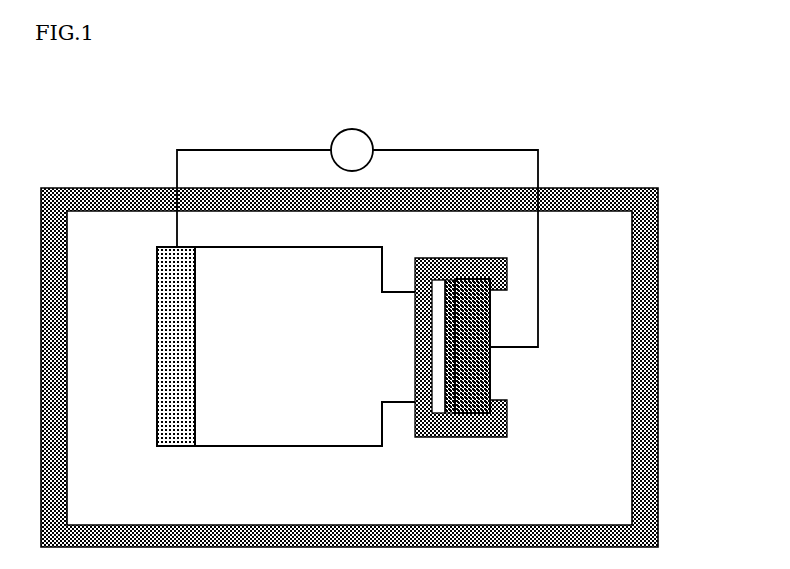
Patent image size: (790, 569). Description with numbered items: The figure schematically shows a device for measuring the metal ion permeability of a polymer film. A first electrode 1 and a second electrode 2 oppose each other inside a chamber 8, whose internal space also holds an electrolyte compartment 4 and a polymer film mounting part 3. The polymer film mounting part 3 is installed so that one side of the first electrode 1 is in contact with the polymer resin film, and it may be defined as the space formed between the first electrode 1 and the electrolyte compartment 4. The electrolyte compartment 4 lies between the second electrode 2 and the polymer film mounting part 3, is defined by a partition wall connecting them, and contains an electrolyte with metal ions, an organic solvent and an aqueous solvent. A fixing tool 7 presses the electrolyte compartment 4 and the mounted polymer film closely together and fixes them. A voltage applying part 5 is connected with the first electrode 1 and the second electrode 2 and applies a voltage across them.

The first electrode 1 is at (500, 367).
The second electrode 2 is at (183, 452).
The polymer film mounting part 3 is at (445, 377).
The electrolyte compartment 4 is at (271, 452).
The voltage applying part 5 is at (383, 132).
The fixing tool 7 is at (482, 441).
The chamber 8 is at (665, 490).